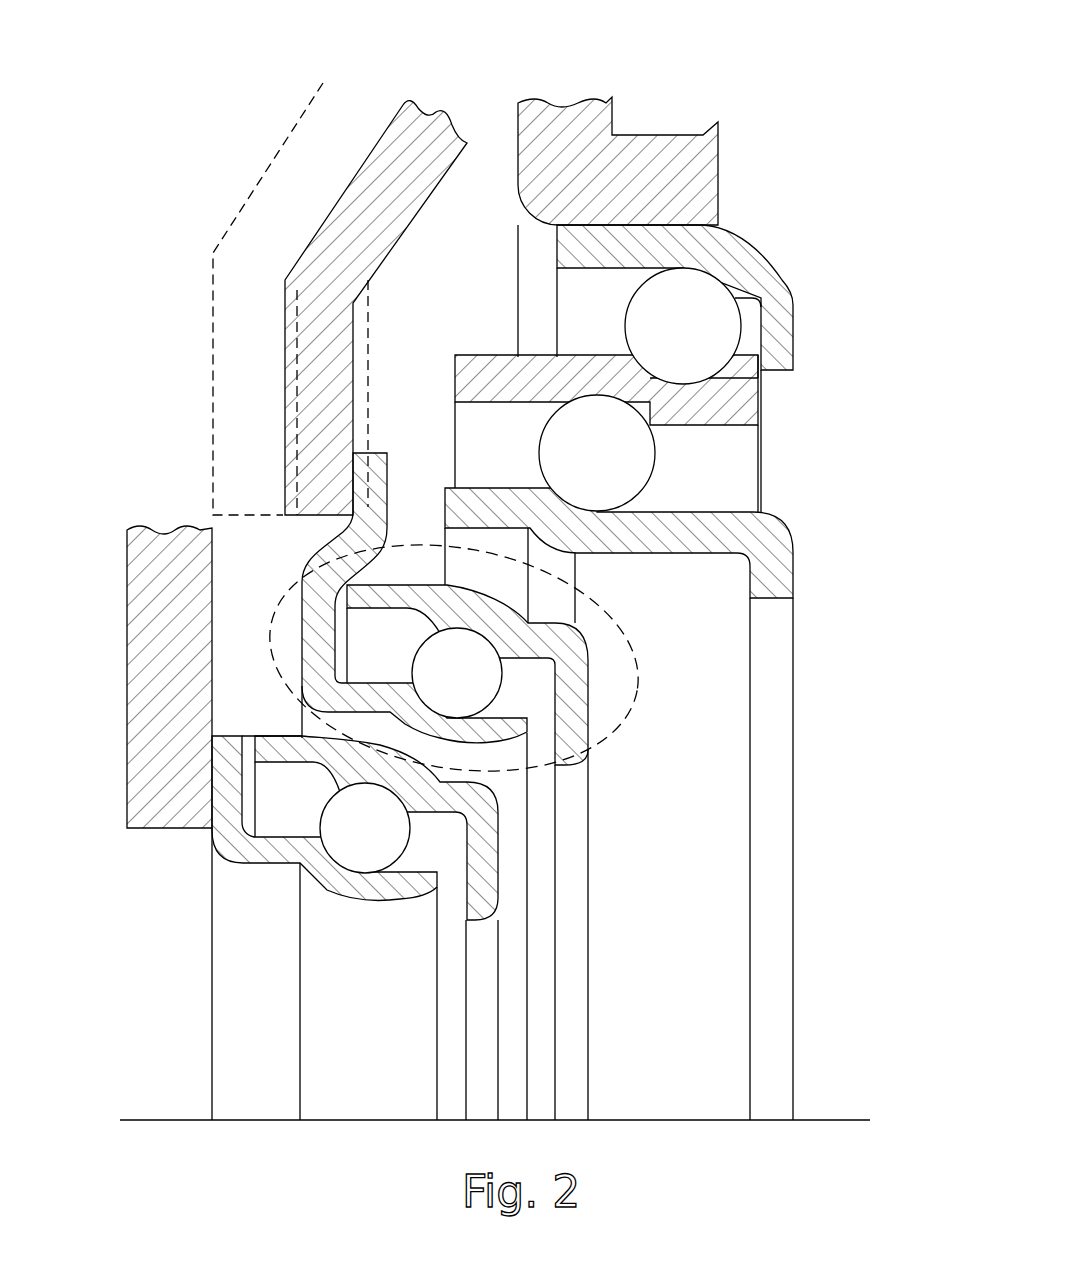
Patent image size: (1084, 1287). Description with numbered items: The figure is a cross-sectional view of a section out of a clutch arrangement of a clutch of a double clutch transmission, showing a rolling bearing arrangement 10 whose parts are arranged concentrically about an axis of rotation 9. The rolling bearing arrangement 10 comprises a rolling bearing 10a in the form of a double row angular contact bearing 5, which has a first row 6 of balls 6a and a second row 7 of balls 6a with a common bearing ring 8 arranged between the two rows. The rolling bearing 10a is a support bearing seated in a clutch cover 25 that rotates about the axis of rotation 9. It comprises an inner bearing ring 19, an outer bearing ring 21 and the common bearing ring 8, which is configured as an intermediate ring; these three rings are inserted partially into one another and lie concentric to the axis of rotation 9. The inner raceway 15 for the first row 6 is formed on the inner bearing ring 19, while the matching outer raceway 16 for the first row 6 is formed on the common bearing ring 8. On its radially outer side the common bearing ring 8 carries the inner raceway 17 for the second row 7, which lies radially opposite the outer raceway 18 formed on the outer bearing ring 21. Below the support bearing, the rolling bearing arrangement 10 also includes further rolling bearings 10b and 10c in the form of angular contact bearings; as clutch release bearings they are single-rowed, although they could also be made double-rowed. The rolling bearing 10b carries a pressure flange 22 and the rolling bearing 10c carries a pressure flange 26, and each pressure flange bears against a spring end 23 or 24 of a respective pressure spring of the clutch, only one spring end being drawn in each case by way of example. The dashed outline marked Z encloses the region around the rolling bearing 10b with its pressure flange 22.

The rolling bearing arrangement 10 is at (697, 72).
The axis of rotation 9 is at (807, 1120).
The double row angular contact bearing 5 is at (591, 396).
The rolling bearing 10a is at (497, 372).
The rolling bearing 10b is at (583, 667).
The rolling bearing 10c is at (440, 846).
The first row 6 is at (679, 453).
The balls 6a is at (679, 389).
The second row 7 is at (721, 326).
The common bearing ring 8 is at (735, 403).
The inner raceway 15 is at (586, 512).
The outer raceway 16 is at (608, 397).
The inner raceway 17 is at (708, 376).
The outer raceway 18 is at (690, 276).
The inner bearing ring 19 is at (773, 568).
The outer bearing ring 21 is at (705, 245).
The pressure flange 22 is at (302, 588).
The spring end 23 is at (317, 467).
The spring end 24 is at (143, 717).
The clutch cover 25 is at (557, 123).
The pressure flange 26 is at (215, 833).
The detail region Z is at (657, 742).